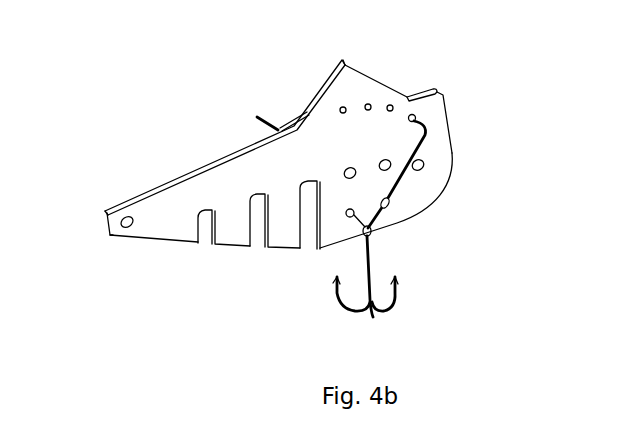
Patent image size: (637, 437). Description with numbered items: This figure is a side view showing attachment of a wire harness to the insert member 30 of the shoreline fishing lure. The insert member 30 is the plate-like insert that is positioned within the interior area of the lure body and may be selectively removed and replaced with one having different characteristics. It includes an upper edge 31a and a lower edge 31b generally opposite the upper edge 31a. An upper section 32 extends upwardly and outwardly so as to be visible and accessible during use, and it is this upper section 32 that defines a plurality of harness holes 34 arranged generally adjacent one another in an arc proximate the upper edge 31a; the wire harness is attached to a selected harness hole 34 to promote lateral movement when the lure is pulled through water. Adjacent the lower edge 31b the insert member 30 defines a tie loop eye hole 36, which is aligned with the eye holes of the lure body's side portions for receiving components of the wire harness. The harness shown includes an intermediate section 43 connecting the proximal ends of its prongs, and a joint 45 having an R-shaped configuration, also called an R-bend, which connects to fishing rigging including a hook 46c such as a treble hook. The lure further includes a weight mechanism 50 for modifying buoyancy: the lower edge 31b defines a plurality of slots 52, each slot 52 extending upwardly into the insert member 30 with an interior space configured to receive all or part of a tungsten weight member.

The insert member 30 is at (170, 80).
The upper edge 31a is at (128, 205).
The lower edge 31b is at (430, 205).
The upper section 32 is at (353, 80).
The harness holes 34 is at (371, 101).
The tie loop eye hole 36 is at (347, 208).
The intermediate section 43 is at (430, 137).
The joint 45 is at (364, 236).
The hook 46c is at (398, 300).
The weight mechanism 50 is at (150, 276).
The slots 52 is at (298, 240).